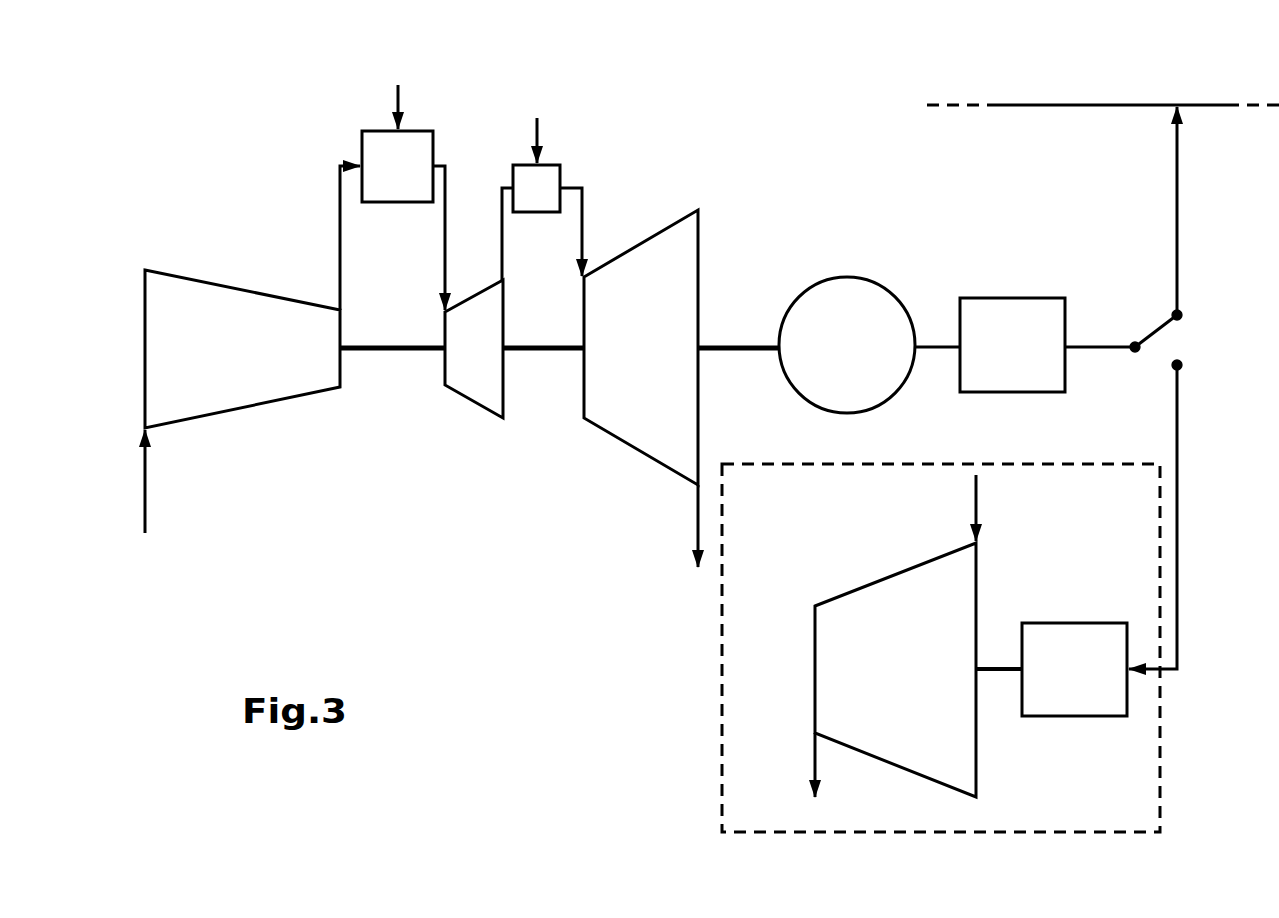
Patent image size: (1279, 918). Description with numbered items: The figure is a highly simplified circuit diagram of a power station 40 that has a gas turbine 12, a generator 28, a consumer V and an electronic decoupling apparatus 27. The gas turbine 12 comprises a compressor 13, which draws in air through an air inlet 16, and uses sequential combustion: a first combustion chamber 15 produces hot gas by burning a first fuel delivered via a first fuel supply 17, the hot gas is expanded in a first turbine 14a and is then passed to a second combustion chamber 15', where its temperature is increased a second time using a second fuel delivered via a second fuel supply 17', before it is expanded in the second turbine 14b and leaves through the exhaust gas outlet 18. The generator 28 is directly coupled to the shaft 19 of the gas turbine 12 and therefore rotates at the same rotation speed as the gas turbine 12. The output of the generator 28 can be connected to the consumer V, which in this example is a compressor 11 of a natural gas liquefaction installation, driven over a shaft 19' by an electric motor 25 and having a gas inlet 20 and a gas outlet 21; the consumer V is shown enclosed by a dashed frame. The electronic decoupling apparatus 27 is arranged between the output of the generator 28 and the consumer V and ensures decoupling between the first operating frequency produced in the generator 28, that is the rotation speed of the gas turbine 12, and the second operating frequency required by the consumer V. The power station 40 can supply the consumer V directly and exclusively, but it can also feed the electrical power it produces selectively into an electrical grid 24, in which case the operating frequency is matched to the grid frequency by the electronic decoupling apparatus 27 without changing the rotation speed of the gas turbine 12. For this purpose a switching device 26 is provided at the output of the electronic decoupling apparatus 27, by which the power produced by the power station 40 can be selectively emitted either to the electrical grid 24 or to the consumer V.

The compressor 11 is at (872, 688).
The gas turbine 12 is at (468, 516).
The compressor 13 is at (250, 366).
The first turbine 14a is at (458, 393).
The second turbine 14b is at (618, 364).
The first combustion chamber 15 is at (348, 145).
The second combustion chamber 15' is at (625, 144).
The air inlet 16 is at (145, 488).
The first fuel supply 17 is at (447, 89).
The second fuel supply 17' is at (593, 106).
The exhaust gas outlet 18 is at (697, 522).
The shaft 19 is at (750, 270).
The shaft 19' is at (1020, 613).
The gas inlet 20 is at (978, 497).
The gas outlet 21 is at (815, 762).
The electrical grid 24 is at (1065, 105).
The motor 25 is at (1051, 688).
The switching device 26 is at (1153, 333).
The decoupling apparatus 27 is at (997, 345).
The generator 28 is at (824, 366).
The power station 40 is at (548, 580).
The consumer V is at (1160, 760).